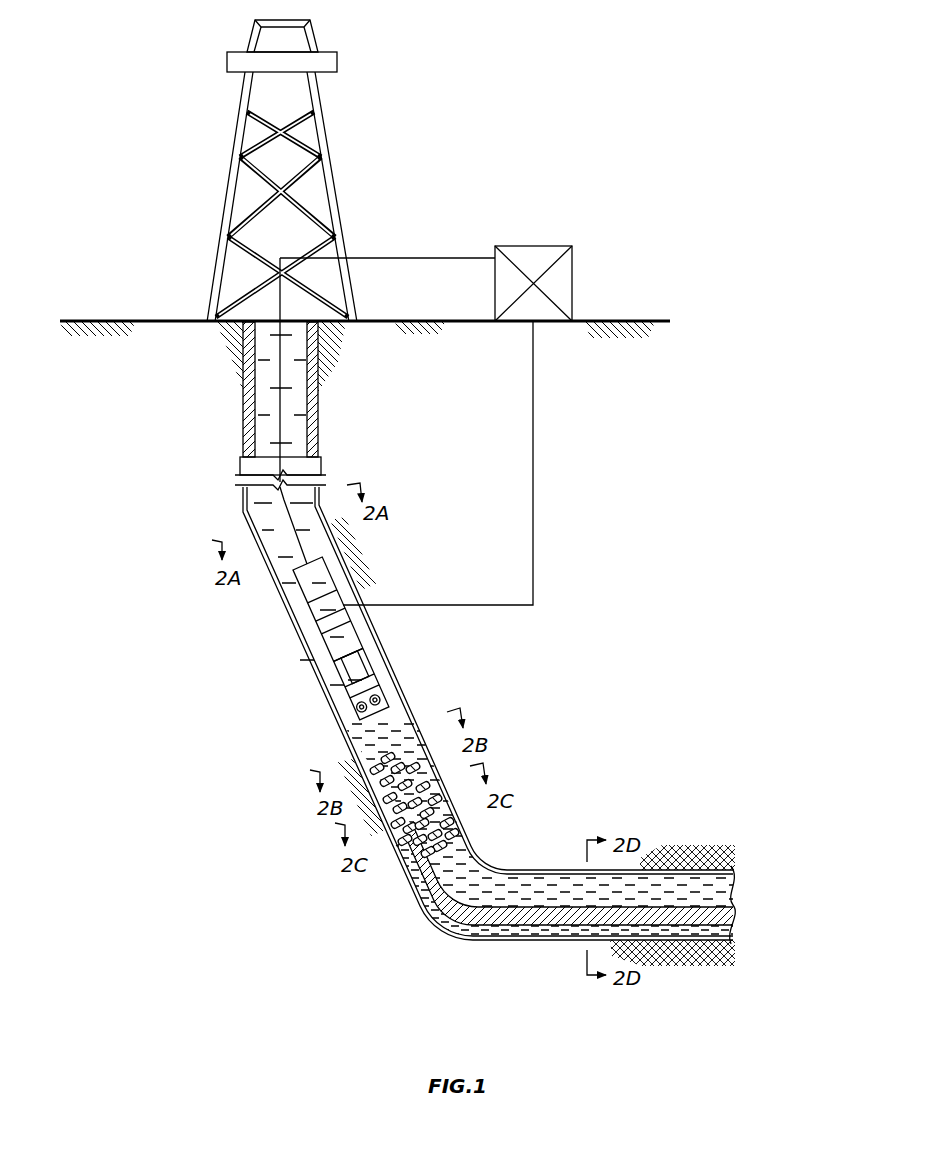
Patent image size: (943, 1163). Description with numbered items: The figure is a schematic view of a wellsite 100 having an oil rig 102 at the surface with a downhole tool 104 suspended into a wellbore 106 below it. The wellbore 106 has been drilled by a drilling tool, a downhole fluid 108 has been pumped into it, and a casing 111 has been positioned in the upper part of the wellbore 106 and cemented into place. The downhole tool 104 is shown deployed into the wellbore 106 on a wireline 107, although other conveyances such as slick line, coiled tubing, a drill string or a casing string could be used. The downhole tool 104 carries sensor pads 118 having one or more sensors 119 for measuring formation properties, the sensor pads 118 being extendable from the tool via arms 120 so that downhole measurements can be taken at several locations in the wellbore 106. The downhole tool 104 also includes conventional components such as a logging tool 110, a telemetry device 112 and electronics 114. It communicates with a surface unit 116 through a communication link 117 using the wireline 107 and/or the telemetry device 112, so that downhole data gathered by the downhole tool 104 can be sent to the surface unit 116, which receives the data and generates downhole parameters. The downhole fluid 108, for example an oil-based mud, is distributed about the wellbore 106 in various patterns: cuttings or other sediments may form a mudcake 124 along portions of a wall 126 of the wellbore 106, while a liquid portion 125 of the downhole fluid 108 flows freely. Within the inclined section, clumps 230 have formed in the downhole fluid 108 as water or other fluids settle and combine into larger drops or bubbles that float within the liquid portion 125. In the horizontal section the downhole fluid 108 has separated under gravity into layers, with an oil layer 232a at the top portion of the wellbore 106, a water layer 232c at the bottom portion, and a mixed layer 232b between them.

The wellsite 100 is at (505, 140).
The oil rig 102 is at (325, 118).
The downhole tool 104 is at (307, 603).
The wellbore 106 is at (238, 529).
The wireline 107 is at (280, 427).
The downhole fluid 108 is at (292, 408).
The logging tool 110 is at (330, 570).
The casing 111 is at (318, 392).
The telemetry device 112 is at (330, 603).
The electronics 114 is at (333, 652).
The surface unit 116 is at (572, 258).
The communication link 117 is at (393, 258).
The sensor pads 118 is at (360, 700).
The sensors 119 is at (372, 700).
The arms 120 is at (373, 672).
The mudcake 124 is at (482, 946).
The liquid portion 125 is at (373, 735).
The wall 126 is at (417, 900).
The clumps 230 is at (373, 805).
The oil layer 232a is at (733, 882).
The mixed layer 232b is at (733, 905).
The water layer 232c is at (733, 930).